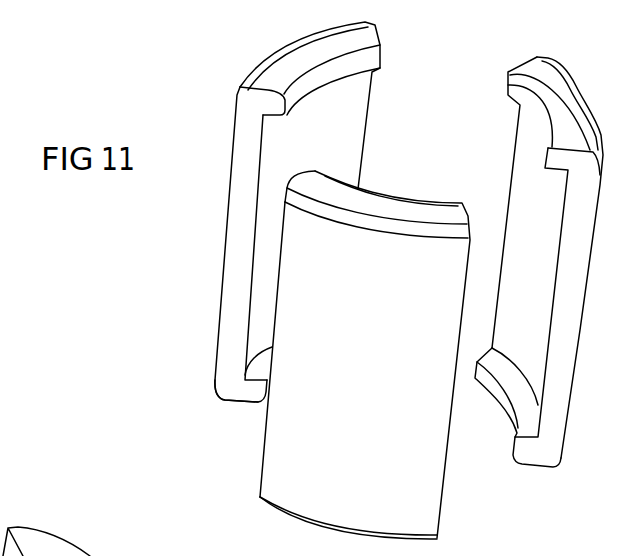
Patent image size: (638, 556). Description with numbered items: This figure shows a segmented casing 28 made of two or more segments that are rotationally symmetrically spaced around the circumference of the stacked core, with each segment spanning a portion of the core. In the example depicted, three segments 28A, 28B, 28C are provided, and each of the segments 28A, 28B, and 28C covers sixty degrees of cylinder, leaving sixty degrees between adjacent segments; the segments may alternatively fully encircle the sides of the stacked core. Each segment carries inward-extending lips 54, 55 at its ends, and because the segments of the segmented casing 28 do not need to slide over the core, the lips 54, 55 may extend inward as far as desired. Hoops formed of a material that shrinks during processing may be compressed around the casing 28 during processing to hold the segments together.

The segmented casing 28 is at (170, 248).
The casing segment 28A is at (382, 354).
The casing segment 28B is at (343, 142).
The casing segment 28C is at (522, 162).
The lip 54 is at (275, 105).
The lip 55 is at (250, 393).